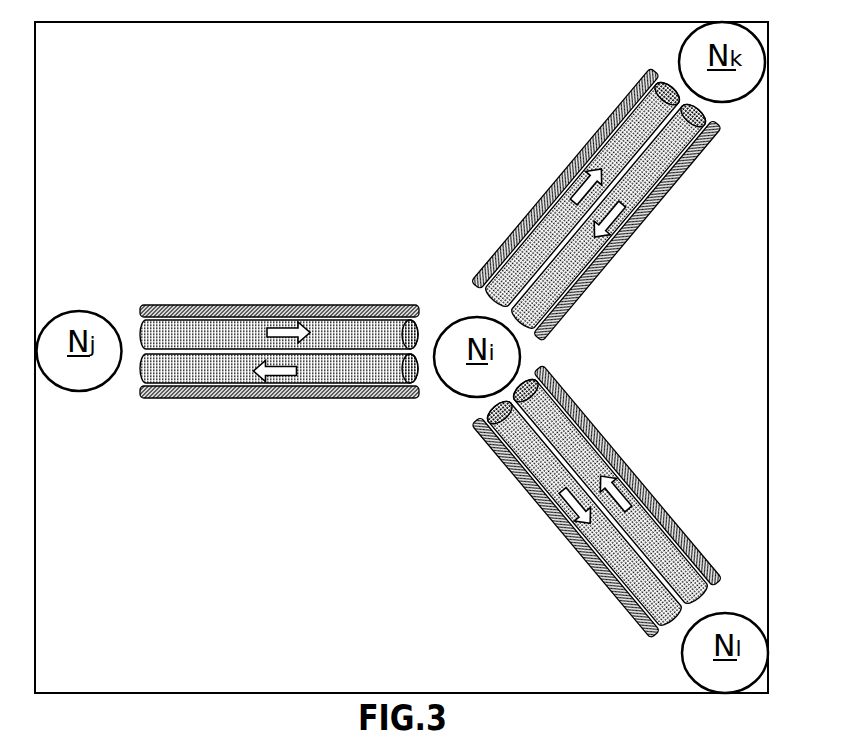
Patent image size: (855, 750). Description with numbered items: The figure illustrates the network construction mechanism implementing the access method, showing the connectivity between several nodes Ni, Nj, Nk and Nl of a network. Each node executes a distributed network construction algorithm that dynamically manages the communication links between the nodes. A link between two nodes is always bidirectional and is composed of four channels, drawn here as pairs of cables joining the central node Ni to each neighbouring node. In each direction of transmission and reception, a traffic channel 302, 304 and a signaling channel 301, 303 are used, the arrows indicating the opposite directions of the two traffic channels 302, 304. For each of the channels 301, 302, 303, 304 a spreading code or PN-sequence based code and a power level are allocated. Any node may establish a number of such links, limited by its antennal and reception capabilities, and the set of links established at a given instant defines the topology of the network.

The signaling channel 301 is at (279, 278).
The traffic channel 302 is at (279, 306).
The signaling channel 303 is at (279, 425).
The traffic channel 304 is at (279, 404).